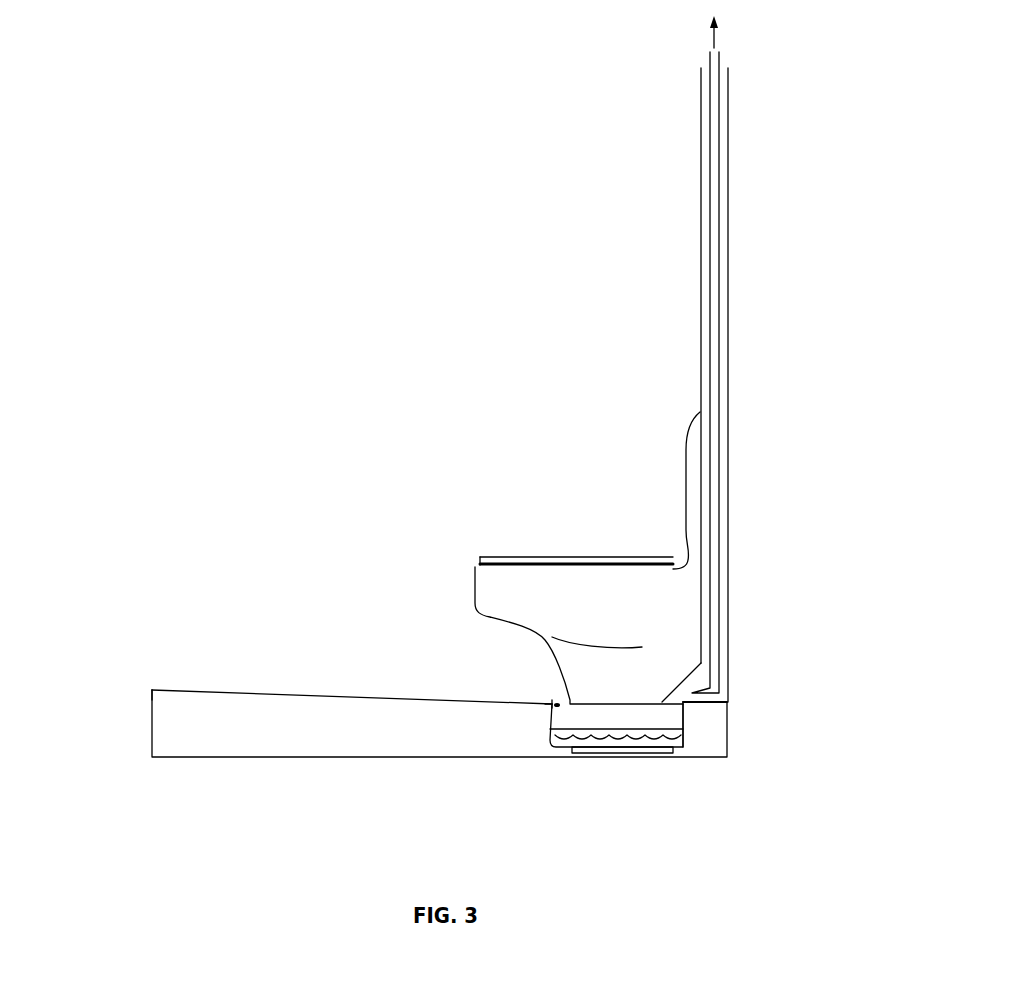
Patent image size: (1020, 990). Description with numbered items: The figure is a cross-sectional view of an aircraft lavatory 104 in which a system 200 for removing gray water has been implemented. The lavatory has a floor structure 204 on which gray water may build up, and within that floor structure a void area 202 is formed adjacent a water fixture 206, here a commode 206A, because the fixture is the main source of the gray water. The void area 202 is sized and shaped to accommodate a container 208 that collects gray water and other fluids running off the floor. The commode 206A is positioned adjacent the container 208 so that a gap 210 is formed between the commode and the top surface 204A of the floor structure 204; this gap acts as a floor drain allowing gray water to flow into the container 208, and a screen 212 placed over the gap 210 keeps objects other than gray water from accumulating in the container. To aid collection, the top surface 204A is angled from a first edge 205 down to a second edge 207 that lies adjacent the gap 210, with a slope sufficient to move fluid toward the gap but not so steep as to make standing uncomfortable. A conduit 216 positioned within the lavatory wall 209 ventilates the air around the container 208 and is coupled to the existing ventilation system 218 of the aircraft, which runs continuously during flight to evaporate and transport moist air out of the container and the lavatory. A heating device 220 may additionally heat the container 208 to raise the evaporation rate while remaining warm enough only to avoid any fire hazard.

The lavatory 104 is at (455, 182).
The system 200 is at (633, 807).
The void area 202 is at (670, 715).
The floor structure 204 is at (152, 724).
The top surface 204A is at (237, 690).
The first edge 205 is at (178, 690).
The water fixture 206 is at (505, 515).
The commode 206A is at (473, 585).
The second edge 207 is at (552, 705).
The container 208 is at (680, 733).
The wall 209 is at (733, 334).
The gap 210 is at (552, 705).
The screen 212 is at (557, 705).
The conduit 216 is at (712, 290).
The ventilation system 218 is at (712, 35).
The heating device 220 is at (669, 753).